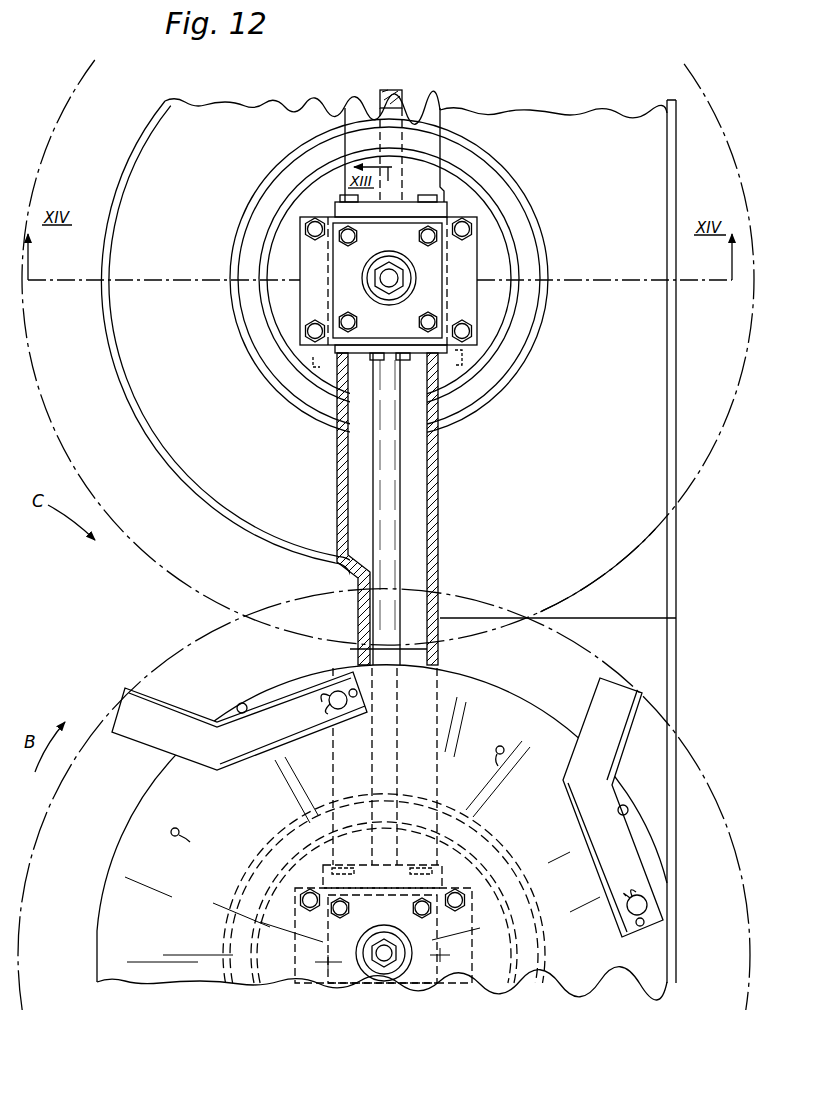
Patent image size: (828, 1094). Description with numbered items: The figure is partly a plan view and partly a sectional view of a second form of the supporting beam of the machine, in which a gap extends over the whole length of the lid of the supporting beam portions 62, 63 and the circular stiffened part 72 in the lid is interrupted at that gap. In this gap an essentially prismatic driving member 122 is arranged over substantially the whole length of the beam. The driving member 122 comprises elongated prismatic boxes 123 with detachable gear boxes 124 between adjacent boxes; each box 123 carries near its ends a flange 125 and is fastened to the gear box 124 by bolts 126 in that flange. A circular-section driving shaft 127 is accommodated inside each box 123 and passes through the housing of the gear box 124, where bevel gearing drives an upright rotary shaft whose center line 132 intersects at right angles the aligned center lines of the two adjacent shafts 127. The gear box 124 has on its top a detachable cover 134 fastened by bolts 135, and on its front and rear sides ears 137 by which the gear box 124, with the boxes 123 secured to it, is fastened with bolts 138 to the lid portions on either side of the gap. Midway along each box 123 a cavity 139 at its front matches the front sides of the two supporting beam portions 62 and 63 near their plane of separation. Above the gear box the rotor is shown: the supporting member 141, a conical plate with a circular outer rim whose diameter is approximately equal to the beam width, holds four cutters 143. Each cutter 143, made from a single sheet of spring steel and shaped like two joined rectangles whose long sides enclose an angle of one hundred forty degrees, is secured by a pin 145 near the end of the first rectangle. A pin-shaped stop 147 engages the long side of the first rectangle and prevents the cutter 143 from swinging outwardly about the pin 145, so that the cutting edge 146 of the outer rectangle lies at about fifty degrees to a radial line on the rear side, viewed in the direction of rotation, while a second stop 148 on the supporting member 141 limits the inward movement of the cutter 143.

The supporting beam portion 62 is at (676, 675).
The supporting beam portion 63 is at (676, 531).
The stiffened part 72 is at (322, 414).
The driving member 122 is at (394, 612).
The box 123 is at (345, 108).
The gear box 124 is at (455, 372).
The flange 125 is at (447, 208).
The bolt 126 is at (356, 199).
The driving shaft 127 is at (396, 90).
The center line 132 is at (396, 284).
The detachable cover 134 is at (338, 262).
The bolt 135 is at (420, 237).
The ear 137 is at (477, 265).
The bolt 138 is at (305, 229).
The cavity 139 is at (352, 600).
The supporting member 141 is at (118, 877).
The cutter 143 is at (200, 768).
The pin 145 is at (338, 691).
The cutting edge 146 is at (143, 697).
The pin-shaped stop 147 is at (242, 703).
The second stop 148 is at (337, 802).